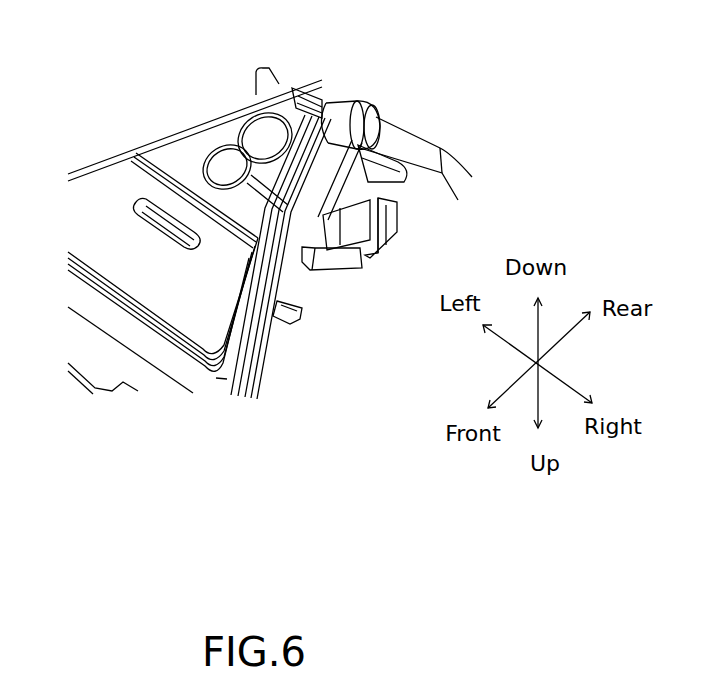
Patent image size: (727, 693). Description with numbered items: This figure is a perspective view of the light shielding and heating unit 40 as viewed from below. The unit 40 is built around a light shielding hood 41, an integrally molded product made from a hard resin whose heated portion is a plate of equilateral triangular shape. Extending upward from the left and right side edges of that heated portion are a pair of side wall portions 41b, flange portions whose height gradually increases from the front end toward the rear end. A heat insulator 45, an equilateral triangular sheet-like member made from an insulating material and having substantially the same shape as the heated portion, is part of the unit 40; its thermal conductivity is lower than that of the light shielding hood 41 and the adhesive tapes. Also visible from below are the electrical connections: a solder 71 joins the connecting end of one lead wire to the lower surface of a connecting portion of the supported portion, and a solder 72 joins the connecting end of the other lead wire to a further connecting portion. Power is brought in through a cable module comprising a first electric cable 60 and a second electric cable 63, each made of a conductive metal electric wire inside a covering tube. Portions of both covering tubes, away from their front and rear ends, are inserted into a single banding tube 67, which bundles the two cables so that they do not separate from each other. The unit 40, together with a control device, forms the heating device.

The light shielding and heating unit 40 is at (333, 286).
The light shielding hood 41 is at (267, 364).
The side wall portion 41b is at (266, 318).
The heat insulator 45 is at (110, 178).
The first electric cable 60 is at (317, 100).
The second electric cable 63 is at (302, 112).
The banding tube 67 is at (440, 150).
The solder 71 is at (248, 122).
The solder 72 is at (218, 155).